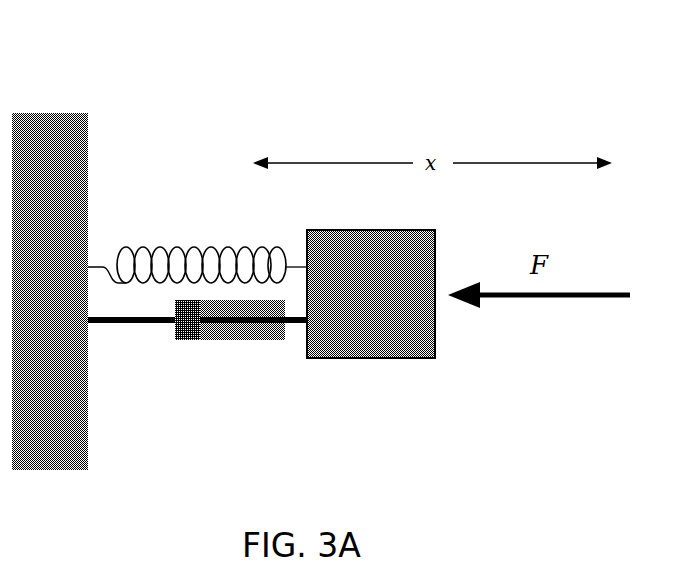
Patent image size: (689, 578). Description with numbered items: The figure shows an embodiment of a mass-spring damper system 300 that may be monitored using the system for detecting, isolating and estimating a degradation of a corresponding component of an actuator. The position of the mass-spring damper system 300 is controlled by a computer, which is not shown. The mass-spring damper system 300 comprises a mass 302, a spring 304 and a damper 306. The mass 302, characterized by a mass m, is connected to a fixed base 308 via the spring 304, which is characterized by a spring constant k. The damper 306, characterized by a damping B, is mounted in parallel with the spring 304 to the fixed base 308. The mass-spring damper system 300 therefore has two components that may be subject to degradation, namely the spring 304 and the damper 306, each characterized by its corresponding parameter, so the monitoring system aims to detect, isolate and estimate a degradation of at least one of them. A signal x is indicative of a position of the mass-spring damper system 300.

The mass-spring-damper system model 300 is at (461, 56).
The mass 302 is at (445, 280).
The spring 304 is at (231, 239).
The damper 306 is at (227, 355).
The fixed wall 308 is at (104, 269).